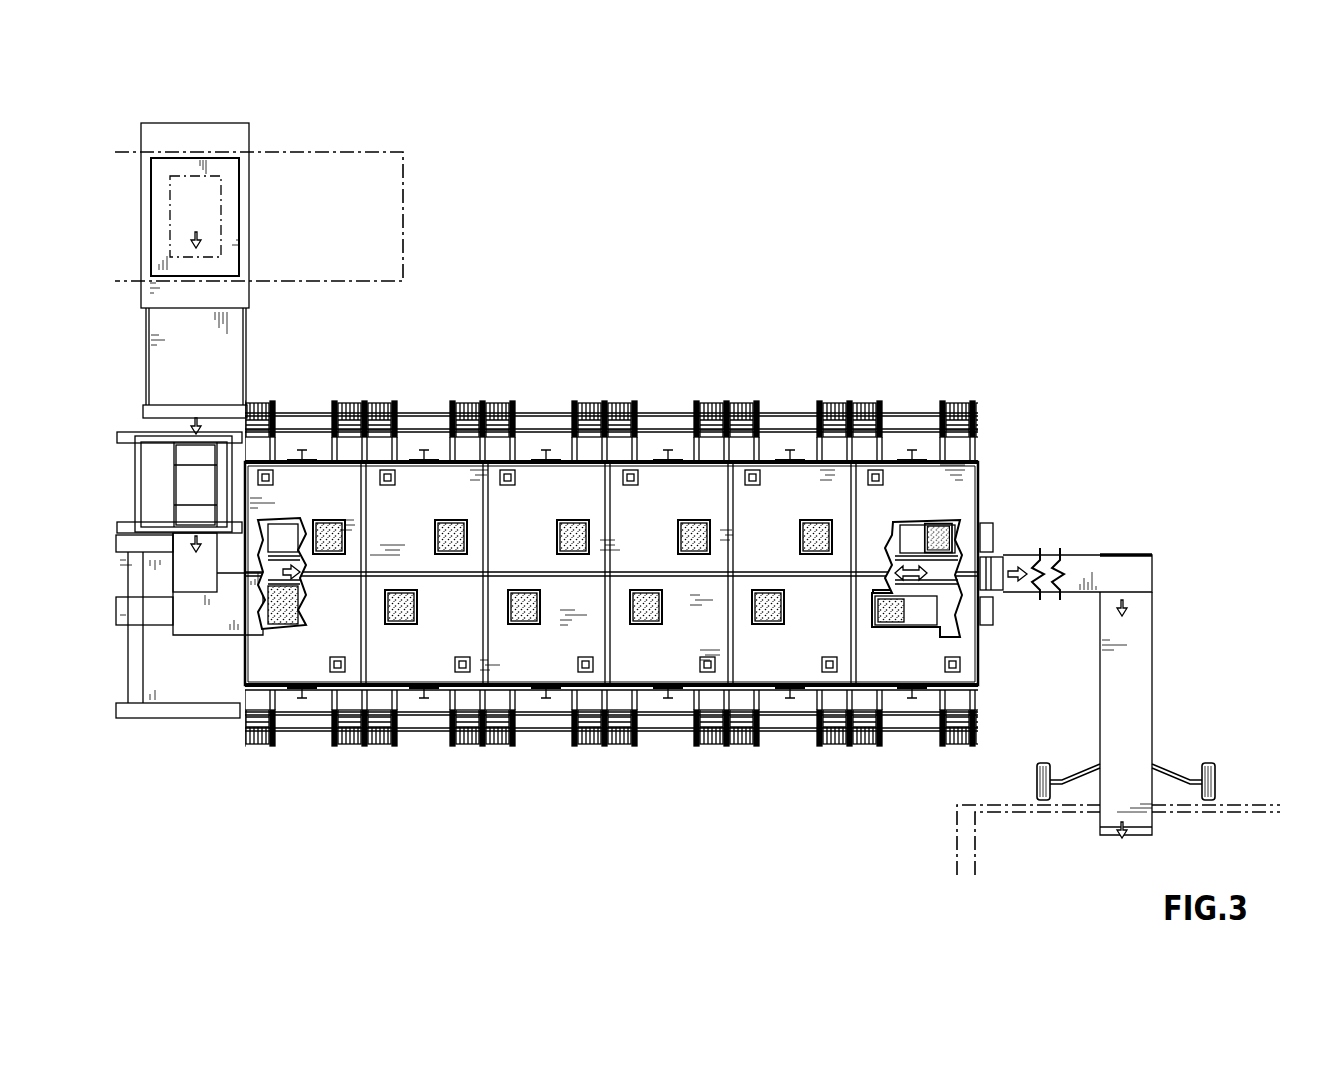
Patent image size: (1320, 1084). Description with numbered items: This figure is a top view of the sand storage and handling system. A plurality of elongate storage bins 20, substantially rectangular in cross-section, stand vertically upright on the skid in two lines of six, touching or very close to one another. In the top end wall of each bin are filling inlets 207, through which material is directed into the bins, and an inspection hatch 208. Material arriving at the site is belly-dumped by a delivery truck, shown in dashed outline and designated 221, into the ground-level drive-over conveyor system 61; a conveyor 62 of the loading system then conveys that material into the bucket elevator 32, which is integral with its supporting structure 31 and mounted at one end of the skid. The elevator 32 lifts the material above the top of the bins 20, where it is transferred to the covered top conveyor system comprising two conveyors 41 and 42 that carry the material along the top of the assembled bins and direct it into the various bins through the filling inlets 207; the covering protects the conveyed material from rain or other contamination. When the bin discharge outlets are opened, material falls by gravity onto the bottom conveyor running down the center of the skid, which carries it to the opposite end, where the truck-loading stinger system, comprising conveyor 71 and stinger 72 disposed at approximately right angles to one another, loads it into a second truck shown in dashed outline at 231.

The storage bins 20 is at (660, 485).
The supporting structure 31 is at (152, 435).
The bucket elevator 32 is at (195, 487).
The conveyor 41 is at (290, 590).
The conveyor 42 is at (908, 530).
The drive-over conveyor system 61 is at (240, 137).
The conveyor 62 is at (232, 330).
The conveyor 71 is at (1088, 560).
The stinger 72 is at (1128, 722).
The filling inlets 207 is at (528, 625).
The inspection hatch 208 is at (458, 665).
The truck 221 is at (403, 228).
The truck 231 is at (957, 838).